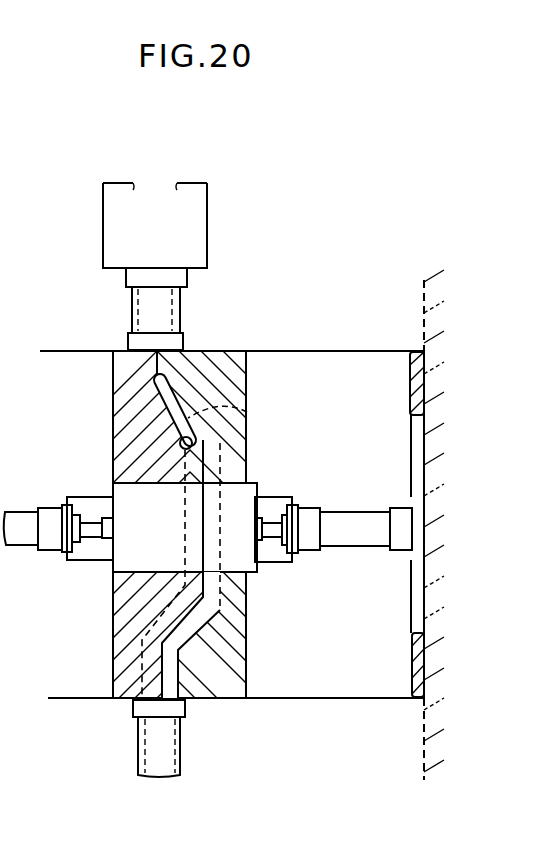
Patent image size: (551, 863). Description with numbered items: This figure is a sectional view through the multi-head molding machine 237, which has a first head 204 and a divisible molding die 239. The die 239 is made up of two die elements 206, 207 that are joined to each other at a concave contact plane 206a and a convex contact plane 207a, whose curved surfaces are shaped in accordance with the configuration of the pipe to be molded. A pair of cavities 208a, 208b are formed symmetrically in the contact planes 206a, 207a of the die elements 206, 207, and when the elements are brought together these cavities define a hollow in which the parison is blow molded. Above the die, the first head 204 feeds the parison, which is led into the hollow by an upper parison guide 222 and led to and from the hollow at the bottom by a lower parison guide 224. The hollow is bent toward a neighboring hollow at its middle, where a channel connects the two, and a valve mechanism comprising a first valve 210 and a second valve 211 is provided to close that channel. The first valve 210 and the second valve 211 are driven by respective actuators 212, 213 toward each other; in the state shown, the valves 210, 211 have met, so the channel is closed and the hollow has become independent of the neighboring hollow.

The first head 204 is at (203, 204).
The multi-head molding machine 237 is at (299, 155).
The upper parison guide 222 is at (132, 308).
The divisible molding die 239 is at (223, 315).
The die element 206 is at (105, 398).
The die element 207 is at (230, 350).
The concave contact plane 206a is at (152, 405).
The cavity 208a is at (178, 440).
The cavity 208b is at (247, 412).
The convex contact plane 207a is at (210, 437).
The actuator 212 is at (25, 510).
The actuator 213 is at (336, 513).
The first valve 210 is at (105, 562).
The second valve 211 is at (256, 570).
The lower parison guide 224 is at (135, 750).